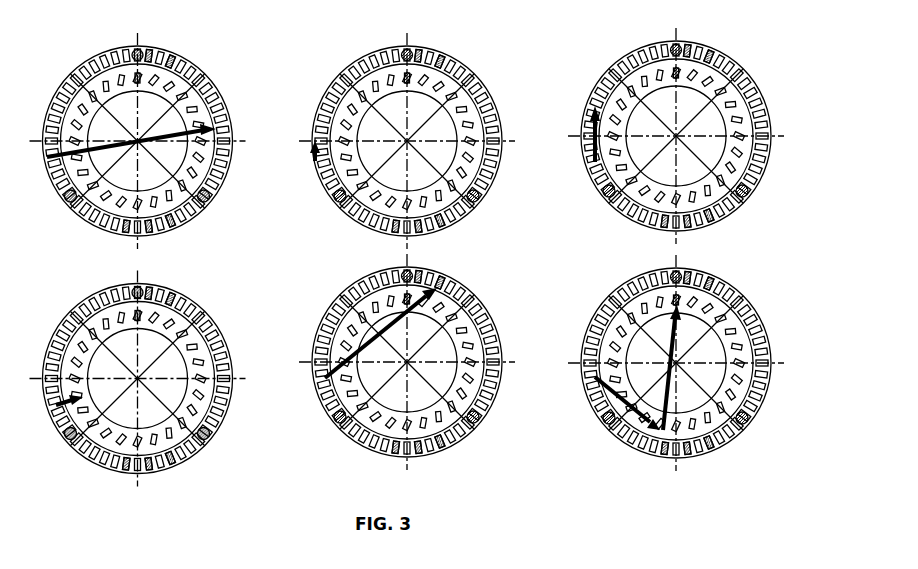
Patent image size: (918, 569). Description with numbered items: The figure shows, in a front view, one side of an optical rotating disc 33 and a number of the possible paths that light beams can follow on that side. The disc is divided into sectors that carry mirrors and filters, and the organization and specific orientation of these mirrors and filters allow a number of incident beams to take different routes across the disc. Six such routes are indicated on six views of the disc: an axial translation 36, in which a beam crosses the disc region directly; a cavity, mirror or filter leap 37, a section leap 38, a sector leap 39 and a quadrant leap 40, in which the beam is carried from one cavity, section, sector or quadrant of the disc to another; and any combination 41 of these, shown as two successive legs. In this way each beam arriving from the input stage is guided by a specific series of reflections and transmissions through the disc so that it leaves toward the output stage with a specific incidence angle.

The optical rotating disc 33 is at (195, 63).
The axial translation 36 is at (79, 206).
The cavity/mirror/filter leap 37 is at (312, 157).
The section leap 38 is at (582, 149).
The sector leap 39 is at (67, 401).
The quadrant leap 40 is at (322, 403).
The combination of paths 41 is at (600, 408).